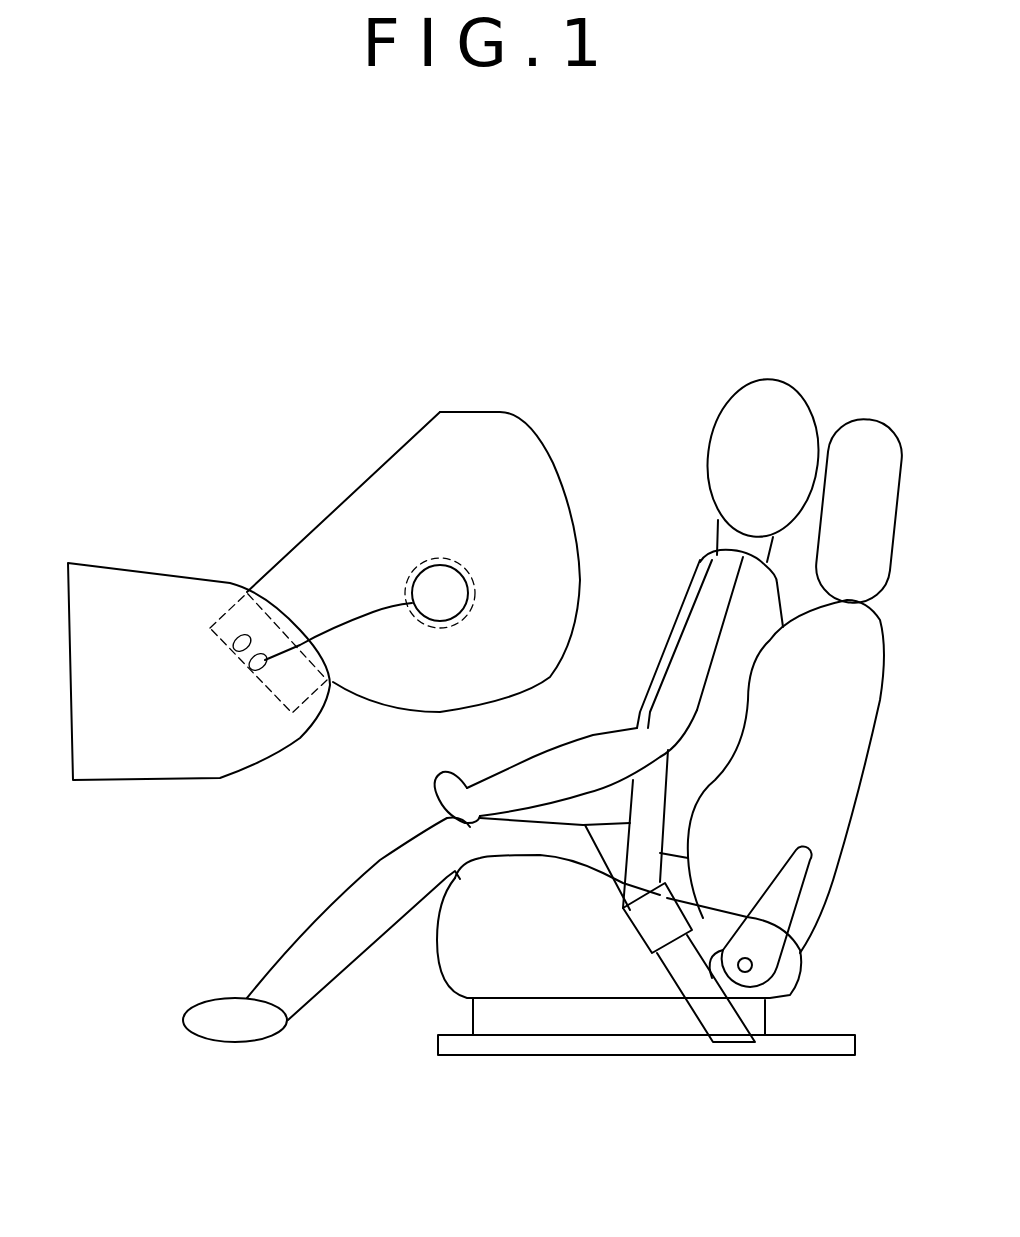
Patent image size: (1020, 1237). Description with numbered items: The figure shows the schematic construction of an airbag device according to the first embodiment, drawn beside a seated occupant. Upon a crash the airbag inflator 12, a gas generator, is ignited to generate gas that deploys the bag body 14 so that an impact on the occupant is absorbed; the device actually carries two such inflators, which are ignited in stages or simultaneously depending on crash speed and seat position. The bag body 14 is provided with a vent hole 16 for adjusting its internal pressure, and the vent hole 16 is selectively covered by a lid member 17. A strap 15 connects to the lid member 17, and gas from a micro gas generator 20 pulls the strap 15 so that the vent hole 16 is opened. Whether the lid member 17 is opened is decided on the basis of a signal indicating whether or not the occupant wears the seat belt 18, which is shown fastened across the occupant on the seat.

The airbag inflator 12 is at (213, 630).
The bag body 14 is at (472, 408).
The strap 15 is at (373, 610).
The vent hole 16 is at (450, 587).
The lid member 17 is at (473, 577).
The seat belt 18 is at (623, 865).
The micro gas generator 20 is at (247, 668).